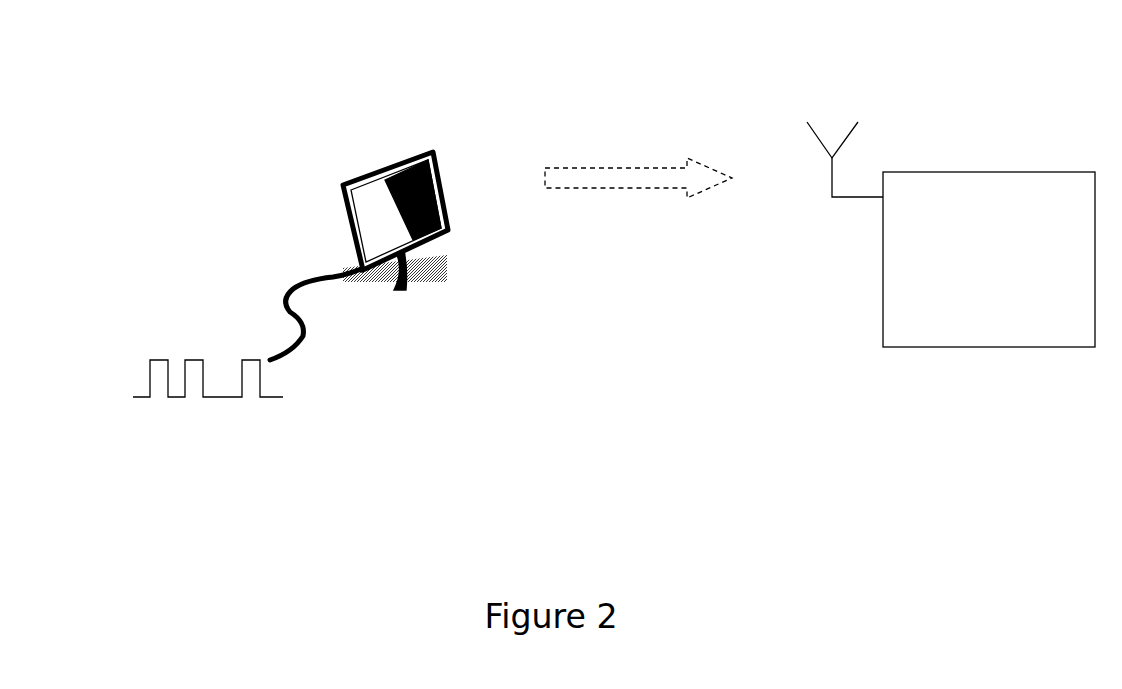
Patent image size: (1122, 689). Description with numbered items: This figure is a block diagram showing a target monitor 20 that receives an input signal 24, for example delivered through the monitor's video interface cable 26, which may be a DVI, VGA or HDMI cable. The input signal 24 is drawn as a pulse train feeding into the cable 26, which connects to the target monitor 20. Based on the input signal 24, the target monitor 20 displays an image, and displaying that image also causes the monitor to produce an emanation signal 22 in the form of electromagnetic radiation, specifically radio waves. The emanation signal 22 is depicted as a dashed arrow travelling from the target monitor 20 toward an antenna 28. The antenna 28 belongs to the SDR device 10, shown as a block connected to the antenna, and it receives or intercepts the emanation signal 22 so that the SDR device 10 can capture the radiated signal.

The SDR device 10 is at (972, 173).
The target monitor 20 is at (435, 152).
The emanation signal 22 is at (597, 168).
The input signal 24 is at (119, 358).
The video interface cable 26 is at (283, 318).
The antenna 28 is at (846, 105).